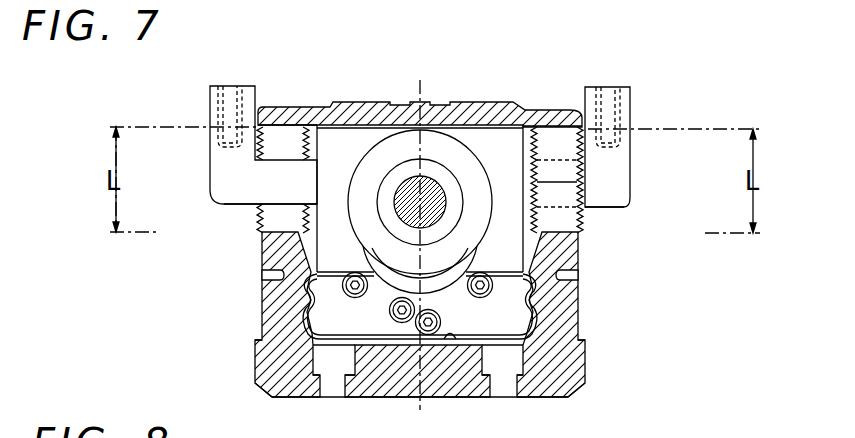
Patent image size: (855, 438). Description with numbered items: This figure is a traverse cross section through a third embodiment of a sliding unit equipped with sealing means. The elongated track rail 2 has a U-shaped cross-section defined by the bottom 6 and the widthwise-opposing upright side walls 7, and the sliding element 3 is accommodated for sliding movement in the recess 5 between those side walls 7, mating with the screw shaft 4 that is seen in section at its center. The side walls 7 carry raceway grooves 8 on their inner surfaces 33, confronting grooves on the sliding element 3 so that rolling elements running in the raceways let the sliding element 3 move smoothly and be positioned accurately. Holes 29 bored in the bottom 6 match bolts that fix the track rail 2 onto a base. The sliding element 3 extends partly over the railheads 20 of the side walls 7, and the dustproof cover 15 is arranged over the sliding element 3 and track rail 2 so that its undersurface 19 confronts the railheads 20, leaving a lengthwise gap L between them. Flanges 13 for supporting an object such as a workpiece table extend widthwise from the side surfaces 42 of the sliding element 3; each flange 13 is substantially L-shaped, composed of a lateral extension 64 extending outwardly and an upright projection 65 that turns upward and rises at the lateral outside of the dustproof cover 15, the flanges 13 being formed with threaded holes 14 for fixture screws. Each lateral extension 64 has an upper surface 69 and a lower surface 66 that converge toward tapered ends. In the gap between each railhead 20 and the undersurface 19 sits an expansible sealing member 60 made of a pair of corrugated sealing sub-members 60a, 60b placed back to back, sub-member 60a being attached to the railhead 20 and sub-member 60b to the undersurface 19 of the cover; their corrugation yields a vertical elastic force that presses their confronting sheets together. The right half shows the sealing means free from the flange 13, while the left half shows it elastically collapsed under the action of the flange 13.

The track rail 2 is at (589, 384).
The sliding element 3 is at (487, 145).
The screw shaft 4 is at (410, 200).
The U-shaped recess 5 is at (449, 345).
The bottom 6 is at (387, 370).
The side walls 7 is at (272, 320).
The raceway grooves 8 is at (255, 360).
The flanges 13 is at (210, 162).
The threaded holes 14 is at (226, 86).
The dustproof cover 15 is at (440, 103).
The undersurface 19 is at (287, 158).
The railheads 20 is at (282, 273).
The holes 29 is at (330, 388).
The inner surfaces 33 is at (300, 302).
The side surfaces 42 is at (308, 288).
The expansible sealing members 60 is at (256, 218).
The sealing sub-member 60a is at (290, 231).
The sealing sub-member 60b is at (279, 133).
The lateral extension 64 is at (287, 181).
The upright projection 65 is at (213, 114).
The lower surface 66 is at (232, 204).
The upper surface 69 is at (289, 130).